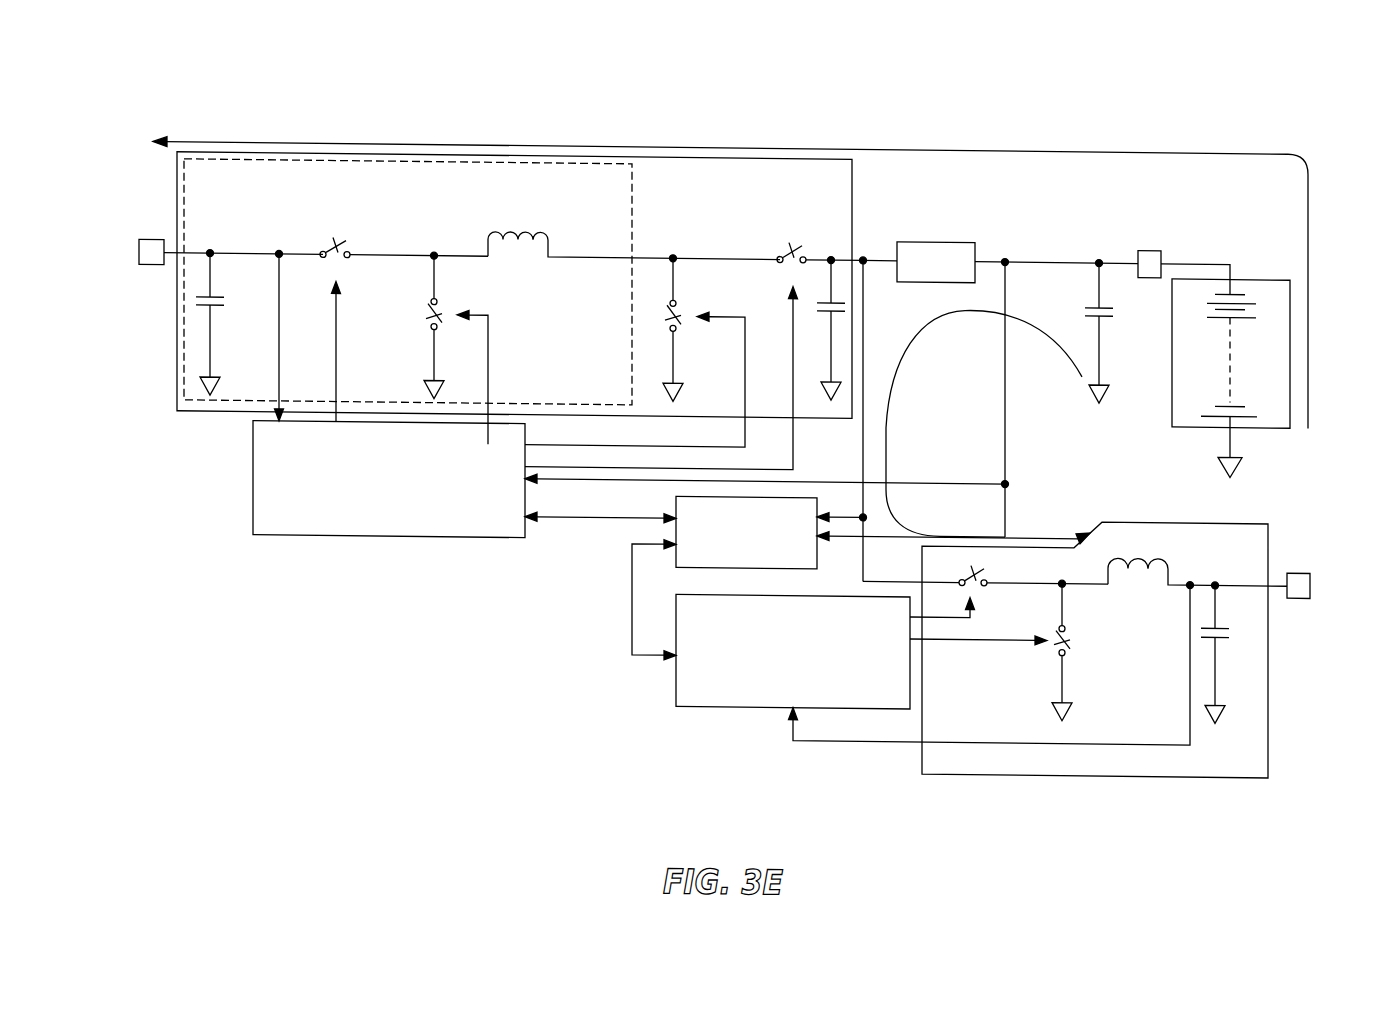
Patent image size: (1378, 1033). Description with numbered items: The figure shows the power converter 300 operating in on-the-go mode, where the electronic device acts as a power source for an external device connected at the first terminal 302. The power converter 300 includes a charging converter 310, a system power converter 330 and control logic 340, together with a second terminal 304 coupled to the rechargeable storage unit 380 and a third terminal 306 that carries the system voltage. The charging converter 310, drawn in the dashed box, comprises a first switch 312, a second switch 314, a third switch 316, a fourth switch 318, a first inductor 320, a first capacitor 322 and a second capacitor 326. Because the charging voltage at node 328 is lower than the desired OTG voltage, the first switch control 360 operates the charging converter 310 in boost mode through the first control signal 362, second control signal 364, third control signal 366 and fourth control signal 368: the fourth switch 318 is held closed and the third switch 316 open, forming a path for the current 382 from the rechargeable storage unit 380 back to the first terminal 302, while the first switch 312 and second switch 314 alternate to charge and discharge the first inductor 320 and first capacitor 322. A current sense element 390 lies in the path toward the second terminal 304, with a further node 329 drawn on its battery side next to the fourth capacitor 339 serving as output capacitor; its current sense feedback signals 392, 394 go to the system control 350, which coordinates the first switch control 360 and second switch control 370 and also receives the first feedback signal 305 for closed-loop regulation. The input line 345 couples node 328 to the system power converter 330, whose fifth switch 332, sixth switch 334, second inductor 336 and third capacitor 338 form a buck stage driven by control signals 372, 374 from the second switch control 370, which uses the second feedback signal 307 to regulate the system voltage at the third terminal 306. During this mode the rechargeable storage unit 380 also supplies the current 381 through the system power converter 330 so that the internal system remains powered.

The power converter 300 is at (826, 108).
The first terminal 302 is at (151, 238).
The second terminal 304 is at (1150, 238).
The first feedback signal 305 is at (965, 472).
The third terminal 306 is at (1300, 586).
The second feedback signal 307 is at (855, 735).
The charging converter 310 is at (460, 153).
The first switch 312 is at (344, 246).
The second switch 314 is at (442, 311).
The third switch 316 is at (678, 310).
The fourth switch 318 is at (796, 247).
The first inductor 320 is at (548, 232).
The first capacitor 322 is at (218, 306).
The second capacitor 326 is at (818, 310).
The node 328 is at (865, 250).
The battery node 329 is at (1008, 248).
The system power converter 330 is at (1128, 766).
The fifth switch 332 is at (985, 563).
The sixth switch 334 is at (1075, 637).
The second inductor 336 is at (1170, 556).
The third capacitor 338 is at (1222, 630).
The fourth capacitor 339 is at (1106, 308).
The control logic 340 is at (498, 605).
The input line 345 is at (866, 298).
The system control 350 is at (673, 552).
The first switch control 360 is at (313, 534).
The first control signal 362 is at (338, 357).
The second control signal 364 is at (488, 360).
The third control signal 366 is at (745, 334).
The fourth control signal 368 is at (793, 418).
The second switch control 370 is at (718, 701).
The control signal 372 is at (975, 604).
The control signal 374 is at (990, 636).
The rechargeable storage unit 380 is at (1290, 343).
The current 381 is at (950, 305).
The current 382 is at (1008, 142).
The current sense element 390 is at (955, 266).
The current sense feedback signal 392 is at (852, 511).
The current sense feedback signal 394 is at (840, 536).